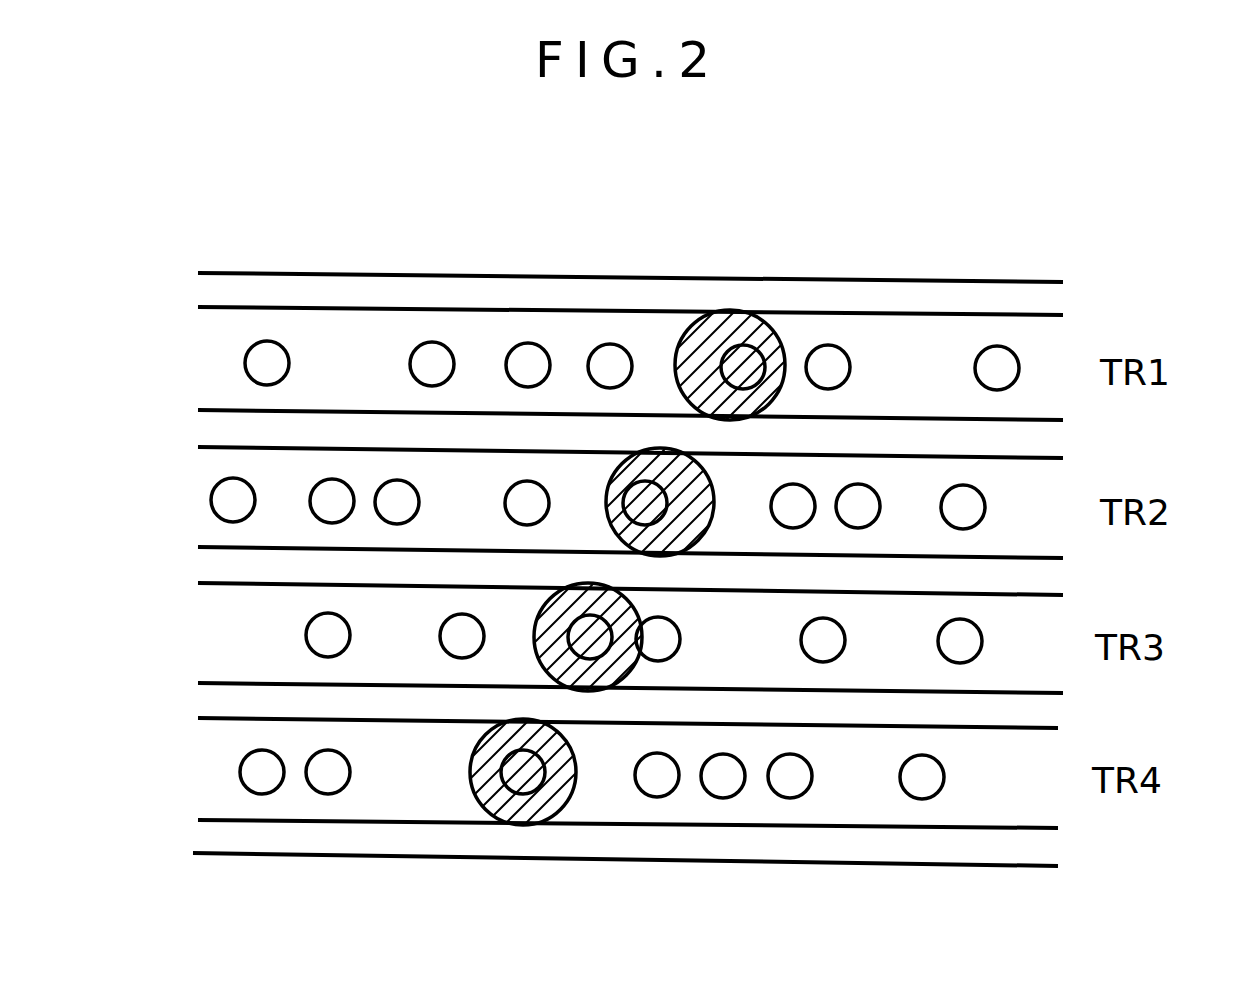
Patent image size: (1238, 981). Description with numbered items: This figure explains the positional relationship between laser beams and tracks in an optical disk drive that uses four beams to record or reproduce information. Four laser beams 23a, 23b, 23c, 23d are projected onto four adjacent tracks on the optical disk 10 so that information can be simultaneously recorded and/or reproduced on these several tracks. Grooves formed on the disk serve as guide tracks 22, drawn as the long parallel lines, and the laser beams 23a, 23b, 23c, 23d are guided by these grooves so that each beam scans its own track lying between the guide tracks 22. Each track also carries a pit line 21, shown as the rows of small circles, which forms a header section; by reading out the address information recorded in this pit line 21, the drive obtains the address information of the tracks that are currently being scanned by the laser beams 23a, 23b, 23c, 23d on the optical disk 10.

The optical disk 10 is at (765, 214).
The pit line 21 is at (432, 341).
The guide tracks 22 is at (1023, 295).
The laser beam 23a is at (783, 320).
The laser beam 23b is at (713, 492).
The laser beam 23c is at (640, 672).
The laser beam 23d is at (565, 815).